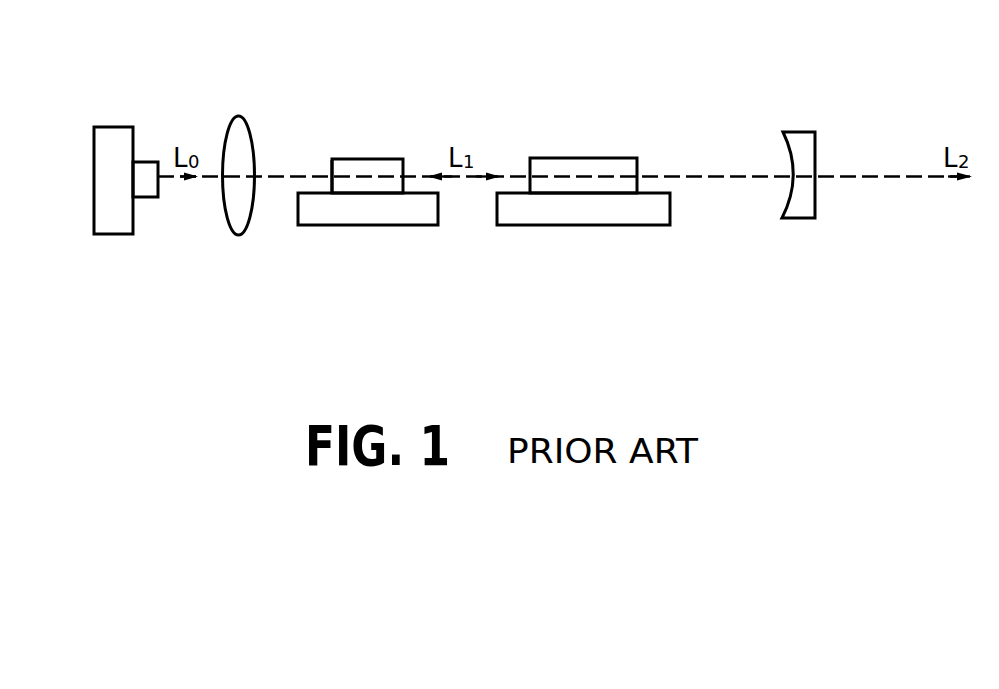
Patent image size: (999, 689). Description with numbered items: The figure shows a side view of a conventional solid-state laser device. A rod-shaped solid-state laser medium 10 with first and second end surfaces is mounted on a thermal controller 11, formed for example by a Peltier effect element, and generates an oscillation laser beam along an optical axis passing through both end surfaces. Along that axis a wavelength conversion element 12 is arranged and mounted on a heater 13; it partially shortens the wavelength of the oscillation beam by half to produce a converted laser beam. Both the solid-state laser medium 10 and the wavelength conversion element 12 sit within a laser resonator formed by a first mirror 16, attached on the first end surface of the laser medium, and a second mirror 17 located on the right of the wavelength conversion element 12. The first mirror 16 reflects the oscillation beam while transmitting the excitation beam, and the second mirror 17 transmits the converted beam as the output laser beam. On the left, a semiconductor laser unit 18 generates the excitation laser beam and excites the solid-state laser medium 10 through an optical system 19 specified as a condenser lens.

The solid-state laser medium 10 is at (352, 158).
The thermal controller 11 is at (375, 227).
The wavelength conversion element 12 is at (577, 158).
The heater 13 is at (582, 227).
The first mirror 16 is at (332, 182).
The second mirror 17 is at (788, 150).
The semiconductor laser unit 18 is at (112, 127).
The optical system 19 is at (237, 116).